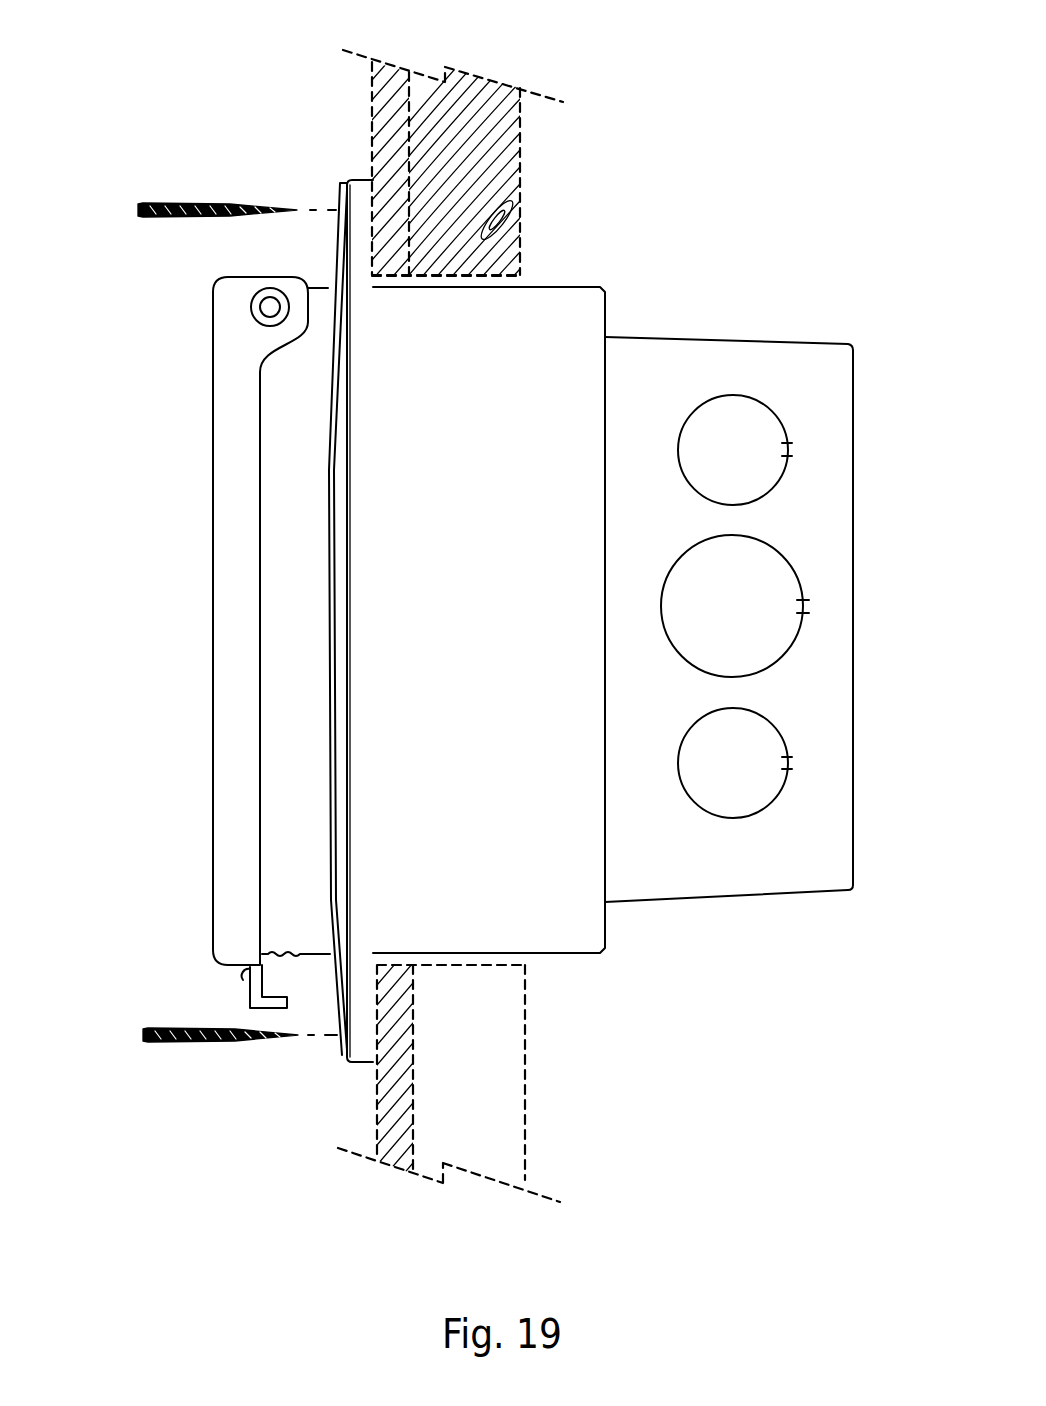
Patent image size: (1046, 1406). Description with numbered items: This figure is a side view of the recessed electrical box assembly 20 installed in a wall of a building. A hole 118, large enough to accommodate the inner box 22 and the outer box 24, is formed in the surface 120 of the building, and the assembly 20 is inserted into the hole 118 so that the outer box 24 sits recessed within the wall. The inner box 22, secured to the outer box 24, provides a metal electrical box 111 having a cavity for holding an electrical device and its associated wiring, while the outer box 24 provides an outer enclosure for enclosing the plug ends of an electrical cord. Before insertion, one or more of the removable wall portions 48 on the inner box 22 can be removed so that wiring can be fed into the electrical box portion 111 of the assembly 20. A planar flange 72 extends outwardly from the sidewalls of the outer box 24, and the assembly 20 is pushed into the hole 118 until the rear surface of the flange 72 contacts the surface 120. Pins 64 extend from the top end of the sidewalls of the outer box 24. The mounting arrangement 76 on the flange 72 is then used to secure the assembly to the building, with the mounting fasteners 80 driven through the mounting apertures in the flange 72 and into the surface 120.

The electrical box assembly 20 is at (737, 155).
The inner box 22 is at (727, 338).
The outer box 24 is at (568, 953).
The removable wall portions 48 is at (746, 464).
The pins 64 is at (268, 303).
The flange 72 is at (360, 488).
The mounting arrangement 76 is at (170, 245).
The mounting fasteners 80 is at (203, 203).
The metal electrical box 111 is at (821, 397).
The hole 118 is at (518, 278).
The surface 120 is at (373, 121).